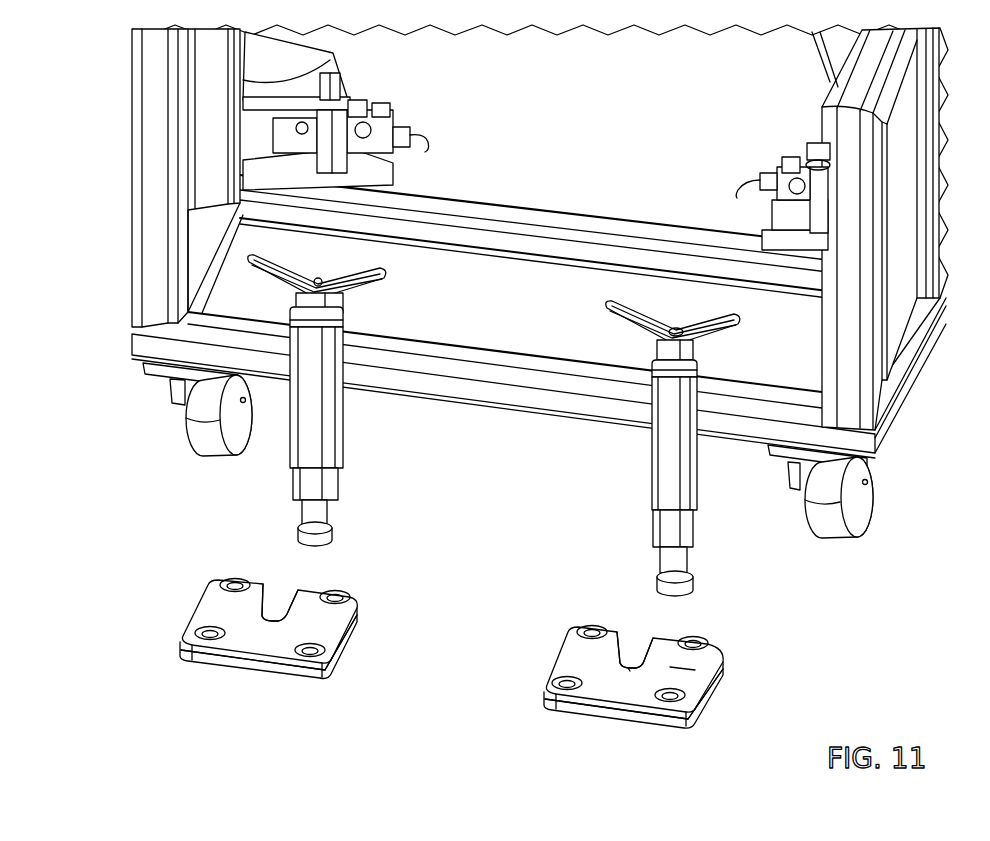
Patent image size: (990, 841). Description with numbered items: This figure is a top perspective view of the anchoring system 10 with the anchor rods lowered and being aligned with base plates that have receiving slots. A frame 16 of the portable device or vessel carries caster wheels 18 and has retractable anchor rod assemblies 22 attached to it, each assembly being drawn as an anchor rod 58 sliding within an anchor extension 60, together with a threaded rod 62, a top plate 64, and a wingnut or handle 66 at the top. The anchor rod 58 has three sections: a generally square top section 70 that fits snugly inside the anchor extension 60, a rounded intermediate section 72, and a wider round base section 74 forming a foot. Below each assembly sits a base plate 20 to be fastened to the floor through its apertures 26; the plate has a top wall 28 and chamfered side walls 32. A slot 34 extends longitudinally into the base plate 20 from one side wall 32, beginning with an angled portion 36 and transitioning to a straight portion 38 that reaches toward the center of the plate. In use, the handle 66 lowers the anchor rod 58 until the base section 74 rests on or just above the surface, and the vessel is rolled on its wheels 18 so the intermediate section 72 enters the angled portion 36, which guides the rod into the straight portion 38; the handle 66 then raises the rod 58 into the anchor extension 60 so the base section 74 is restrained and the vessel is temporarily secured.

The anchoring system 10 is at (524, 281).
The frame 16 is at (150, 78).
The caster wheels 18 is at (853, 516).
The base plate 20 is at (452, 647).
The retractable anchor rod assembly 22 is at (520, 423).
The apertures 26 is at (187, 626).
The top wall 28 is at (712, 675).
The side walls 32 is at (464, 667).
The slot 34 is at (276, 567).
The angled portion 36 is at (608, 711).
The straight portion 38 is at (635, 627).
The anchor rod 58 is at (495, 423).
The anchor extension 60 is at (335, 415).
The threaded rod 62 is at (319, 281).
The top plate 64 is at (662, 366).
The handle 66 is at (665, 326).
The top section 70 is at (673, 528).
The intermediate section 72 is at (685, 562).
The base section 74 is at (690, 583).